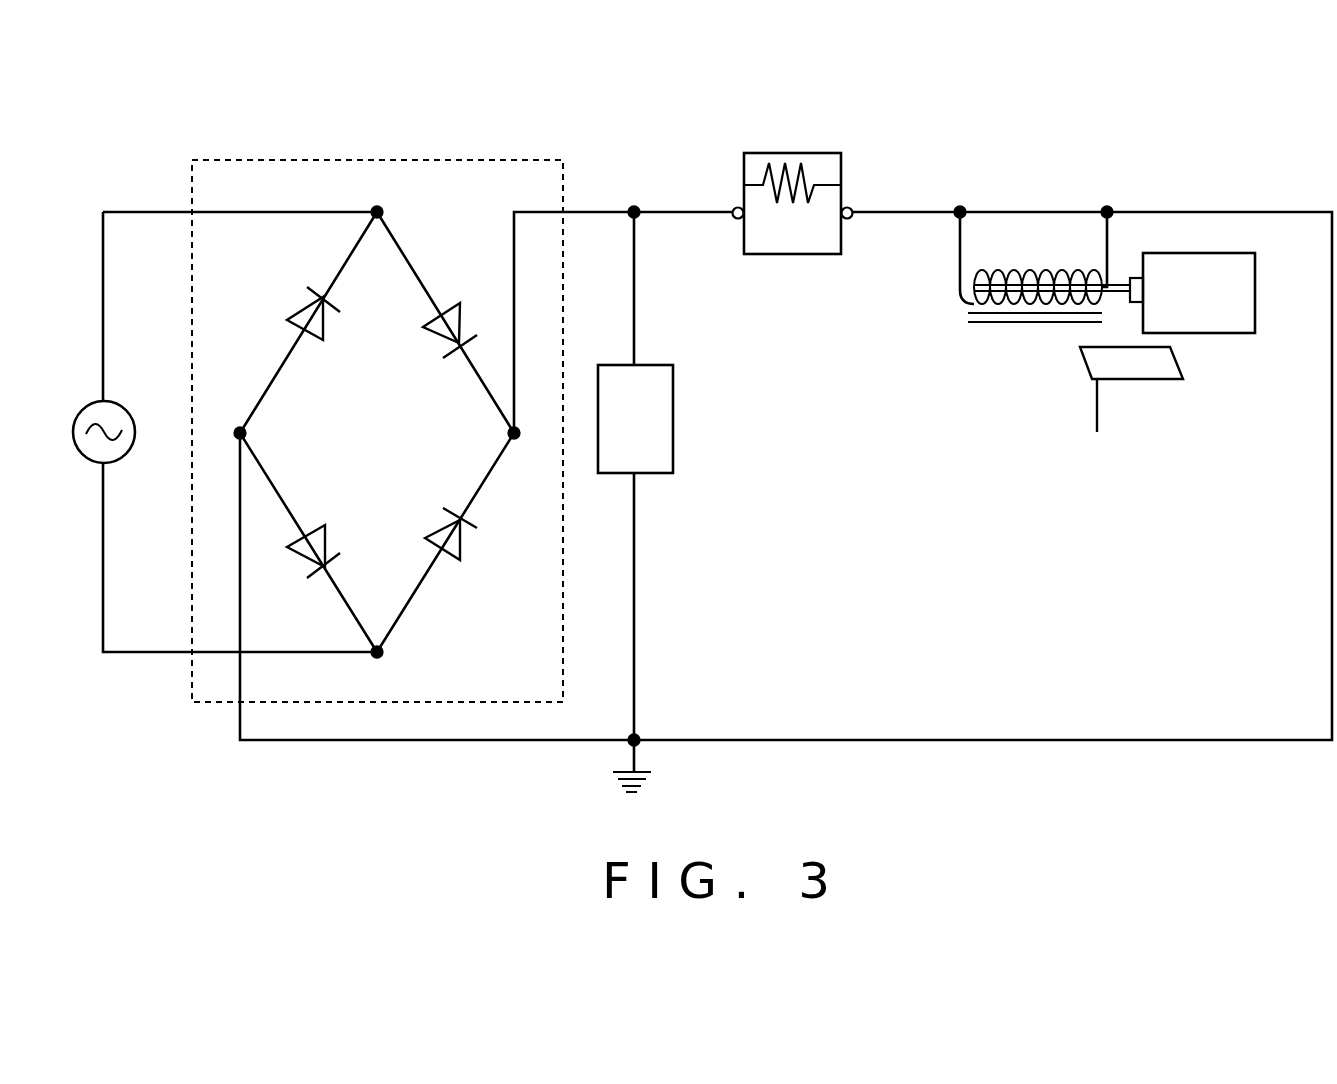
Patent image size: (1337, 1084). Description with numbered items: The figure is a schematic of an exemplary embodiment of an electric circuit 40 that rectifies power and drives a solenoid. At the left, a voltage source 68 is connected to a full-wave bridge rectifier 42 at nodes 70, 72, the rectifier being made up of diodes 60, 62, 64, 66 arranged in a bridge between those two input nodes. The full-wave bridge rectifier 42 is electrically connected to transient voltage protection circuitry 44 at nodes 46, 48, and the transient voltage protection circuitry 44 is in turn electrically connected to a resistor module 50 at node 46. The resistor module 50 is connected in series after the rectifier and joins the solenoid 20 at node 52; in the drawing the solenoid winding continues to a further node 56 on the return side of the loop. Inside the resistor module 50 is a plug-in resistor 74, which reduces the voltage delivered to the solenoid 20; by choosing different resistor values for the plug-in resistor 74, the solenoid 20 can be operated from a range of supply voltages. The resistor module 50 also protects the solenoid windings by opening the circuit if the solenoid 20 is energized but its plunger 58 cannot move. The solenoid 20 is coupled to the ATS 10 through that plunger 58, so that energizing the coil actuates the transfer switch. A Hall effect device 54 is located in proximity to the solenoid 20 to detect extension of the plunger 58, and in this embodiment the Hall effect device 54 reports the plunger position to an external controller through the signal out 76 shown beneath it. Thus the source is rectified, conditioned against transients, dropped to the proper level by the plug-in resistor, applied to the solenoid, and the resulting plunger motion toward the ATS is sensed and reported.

The ATS 10 is at (1255, 295).
The solenoid 20 is at (968, 305).
The electric circuit 40 is at (889, 93).
The full-wave bridge rectifier 42 is at (482, 160).
The transient voltage protection circuitry 44 is at (673, 436).
The node 46 is at (640, 207).
The node 48 is at (637, 735).
The resistor module 50 is at (795, 175).
The node 52 is at (960, 200).
The Hall effect device 54 is at (1143, 380).
The node 56 is at (1107, 200).
The plunger 58 is at (1135, 278).
The diode 60 is at (462, 320).
The diode 62 is at (466, 537).
The diode 64 is at (324, 545).
The diode 66 is at (297, 303).
The voltage source 68 is at (73, 432).
The node 70 is at (383, 210).
The node 72 is at (385, 654).
The plug-in resistor 74 is at (830, 187).
The signal out 76 is at (1060, 464).